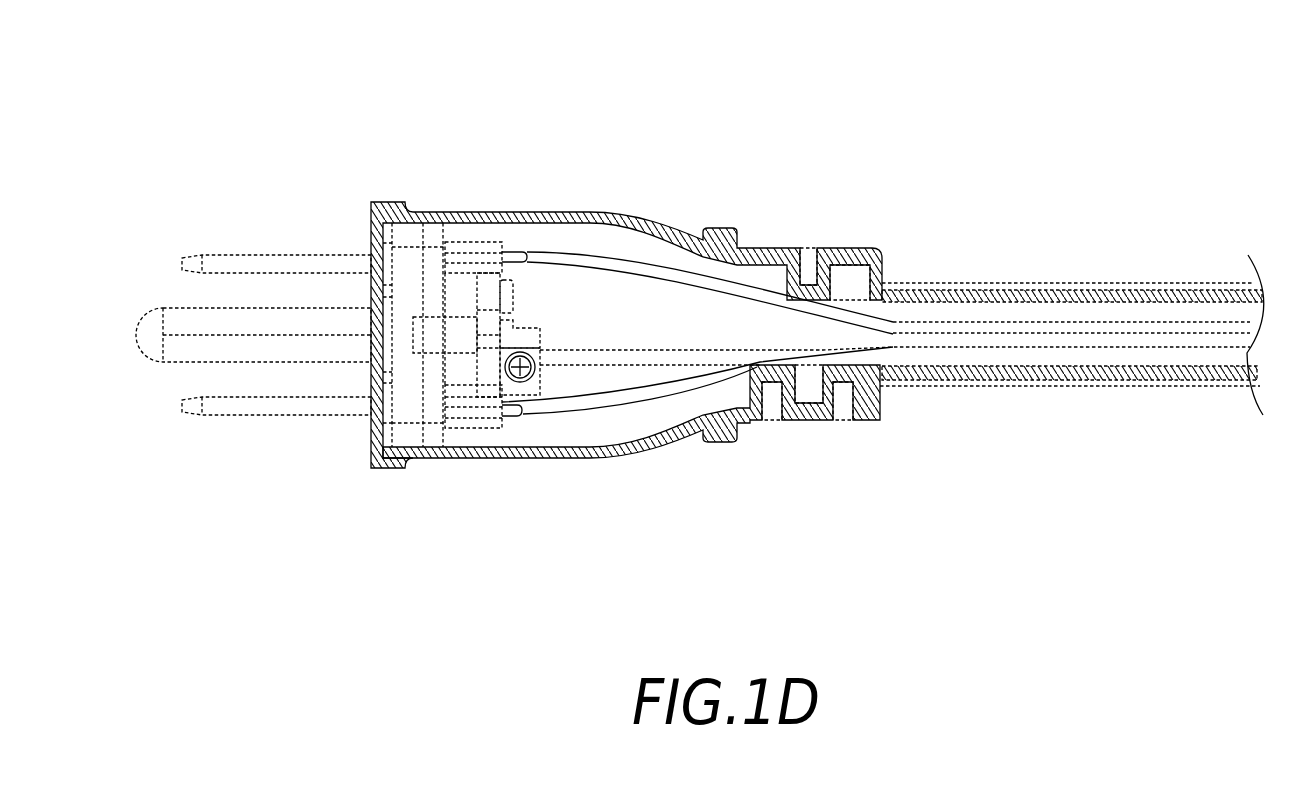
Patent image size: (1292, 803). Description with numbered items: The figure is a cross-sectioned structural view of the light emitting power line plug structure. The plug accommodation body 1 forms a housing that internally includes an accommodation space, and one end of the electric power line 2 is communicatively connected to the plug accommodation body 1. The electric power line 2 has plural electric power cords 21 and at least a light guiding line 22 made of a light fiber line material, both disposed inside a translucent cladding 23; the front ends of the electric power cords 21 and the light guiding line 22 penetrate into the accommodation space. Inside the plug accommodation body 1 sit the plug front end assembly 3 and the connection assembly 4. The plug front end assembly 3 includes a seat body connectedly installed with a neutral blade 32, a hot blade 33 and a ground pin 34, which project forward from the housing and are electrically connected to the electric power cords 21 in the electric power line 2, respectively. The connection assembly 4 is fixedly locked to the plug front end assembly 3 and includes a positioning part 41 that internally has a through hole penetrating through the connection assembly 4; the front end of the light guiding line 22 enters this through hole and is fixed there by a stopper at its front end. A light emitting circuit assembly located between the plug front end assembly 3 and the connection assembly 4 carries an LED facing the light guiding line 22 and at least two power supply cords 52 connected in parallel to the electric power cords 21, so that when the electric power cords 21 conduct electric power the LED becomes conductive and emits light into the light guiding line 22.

The plug accommodation body 1 is at (810, 422).
The electric power line 2 is at (883, 311).
The electric power cords 21 is at (697, 341).
The light guiding line 22 is at (890, 356).
The translucent cladding 23 is at (1035, 290).
The plug front end assembly 3 is at (417, 405).
The neutral blade 32 is at (287, 413).
The hot blade 33 is at (288, 255).
The ground pin 34 is at (142, 355).
The connection assembly 4 is at (493, 377).
The positioning part 41 is at (525, 328).
The power supply cords 52 is at (512, 248).